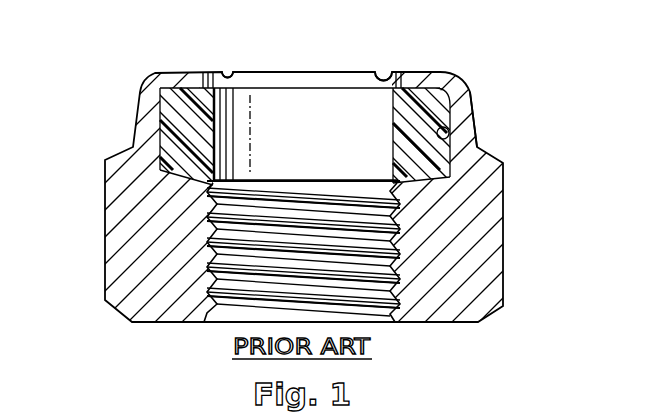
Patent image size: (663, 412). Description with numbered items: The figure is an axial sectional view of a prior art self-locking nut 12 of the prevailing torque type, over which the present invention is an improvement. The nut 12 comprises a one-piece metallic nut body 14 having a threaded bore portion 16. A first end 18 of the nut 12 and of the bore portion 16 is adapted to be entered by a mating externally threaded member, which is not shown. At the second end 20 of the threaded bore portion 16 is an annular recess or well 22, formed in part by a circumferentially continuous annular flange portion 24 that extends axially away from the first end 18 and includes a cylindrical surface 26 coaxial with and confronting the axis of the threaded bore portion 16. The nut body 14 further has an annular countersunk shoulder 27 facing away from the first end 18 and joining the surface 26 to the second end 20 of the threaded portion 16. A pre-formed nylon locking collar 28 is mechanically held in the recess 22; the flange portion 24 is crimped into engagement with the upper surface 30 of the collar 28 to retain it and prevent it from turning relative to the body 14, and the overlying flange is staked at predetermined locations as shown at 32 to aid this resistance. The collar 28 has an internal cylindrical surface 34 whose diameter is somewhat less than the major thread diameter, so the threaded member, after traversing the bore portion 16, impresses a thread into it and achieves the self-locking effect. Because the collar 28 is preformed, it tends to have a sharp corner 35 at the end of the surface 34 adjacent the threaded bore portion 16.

The prior art nut 12 is at (103, 131).
The nut body 14 is at (487, 246).
The threaded bore portion 16 is at (205, 222).
The first end 18 is at (390, 323).
The second end 20 is at (345, 180).
The annular recess 22 is at (445, 131).
The annular flange portion 24 is at (463, 122).
The cylindrical surface 26 is at (170, 105).
The annular countersunk shoulder 27 is at (160, 182).
The nylon locking collar 28 is at (277, 107).
The upper surface 30 is at (402, 87).
The staking 32 is at (227, 71).
The internal cylindrical surface 34 is at (392, 117).
The sharp corner 35 is at (377, 183).